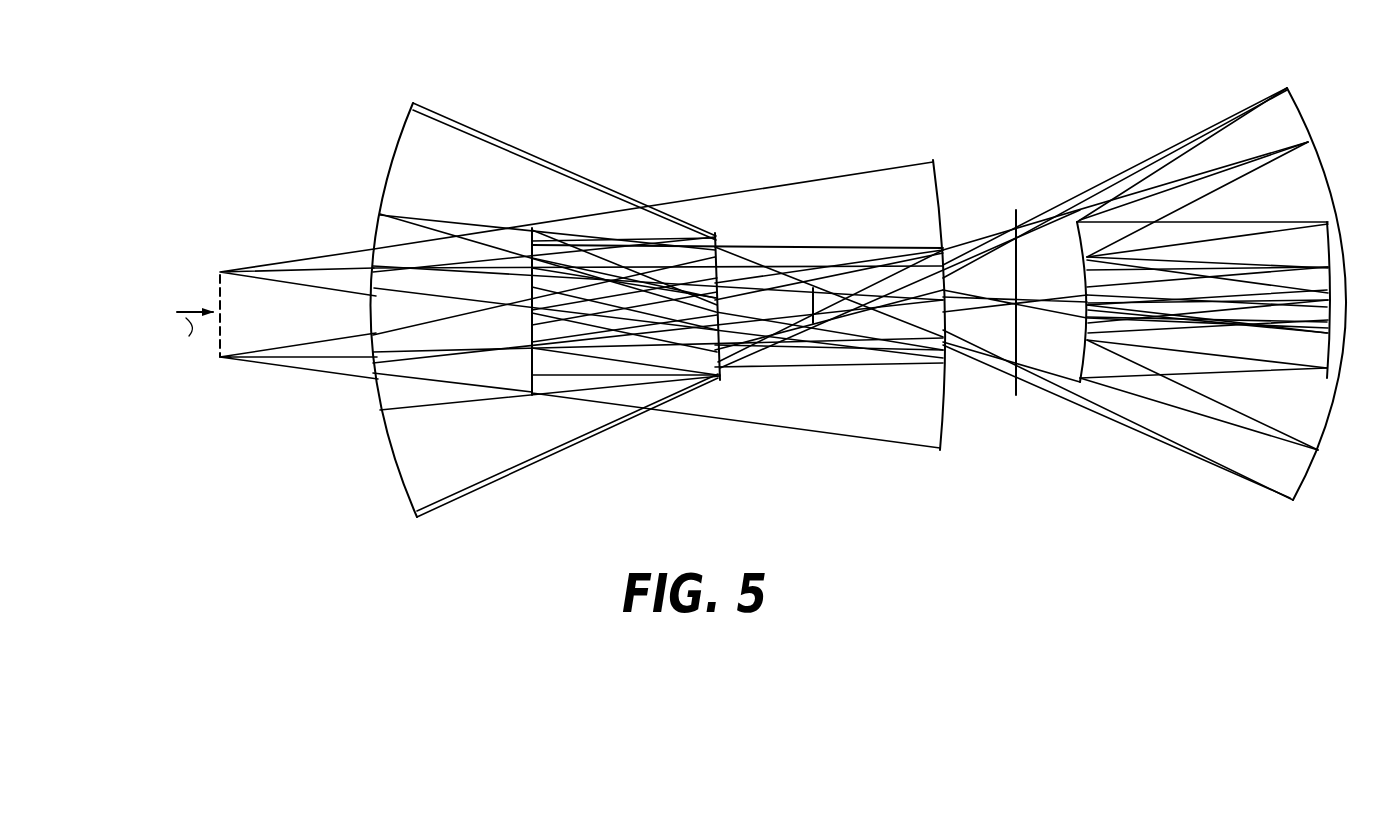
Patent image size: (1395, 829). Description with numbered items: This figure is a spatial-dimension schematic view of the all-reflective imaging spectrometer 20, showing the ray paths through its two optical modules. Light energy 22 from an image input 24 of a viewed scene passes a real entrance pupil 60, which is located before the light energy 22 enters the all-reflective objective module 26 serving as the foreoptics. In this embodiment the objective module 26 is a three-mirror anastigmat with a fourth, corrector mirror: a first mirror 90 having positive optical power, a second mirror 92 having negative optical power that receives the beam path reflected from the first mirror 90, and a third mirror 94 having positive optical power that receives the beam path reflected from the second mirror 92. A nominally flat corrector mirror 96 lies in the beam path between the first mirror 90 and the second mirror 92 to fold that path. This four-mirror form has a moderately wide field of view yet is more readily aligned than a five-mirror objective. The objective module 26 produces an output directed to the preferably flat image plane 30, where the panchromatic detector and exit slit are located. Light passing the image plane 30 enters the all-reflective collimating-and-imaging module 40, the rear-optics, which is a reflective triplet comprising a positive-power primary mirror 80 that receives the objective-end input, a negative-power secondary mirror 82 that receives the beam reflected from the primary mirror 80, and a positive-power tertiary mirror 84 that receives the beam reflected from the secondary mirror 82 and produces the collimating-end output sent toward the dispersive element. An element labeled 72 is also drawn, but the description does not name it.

The imaging spectrometer 20 is at (539, 118).
The light energy 22 is at (187, 331).
The image input 24 is at (139, 290).
The objective module 26 is at (739, 212).
The image plane 30 is at (1012, 218).
The collimating-and-imaging module 40 is at (1183, 458).
The real entrance pupil 60 is at (219, 280).
The stop 72 is at (814, 304).
The primary mirror 80 is at (1306, 119).
The secondary mirror 82 is at (1075, 244).
The tertiary mirror 84 is at (1330, 224).
The first mirror 90 is at (938, 182).
The second mirror 92 is at (722, 284).
The third mirror 94 is at (392, 148).
The corrector mirror 96 is at (528, 262).